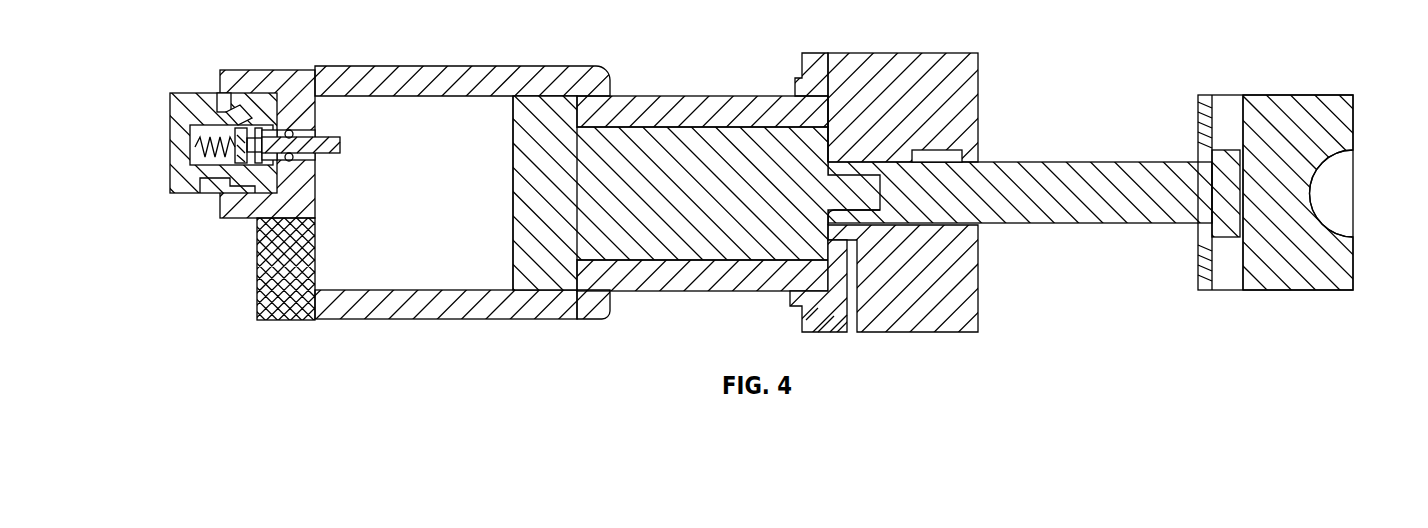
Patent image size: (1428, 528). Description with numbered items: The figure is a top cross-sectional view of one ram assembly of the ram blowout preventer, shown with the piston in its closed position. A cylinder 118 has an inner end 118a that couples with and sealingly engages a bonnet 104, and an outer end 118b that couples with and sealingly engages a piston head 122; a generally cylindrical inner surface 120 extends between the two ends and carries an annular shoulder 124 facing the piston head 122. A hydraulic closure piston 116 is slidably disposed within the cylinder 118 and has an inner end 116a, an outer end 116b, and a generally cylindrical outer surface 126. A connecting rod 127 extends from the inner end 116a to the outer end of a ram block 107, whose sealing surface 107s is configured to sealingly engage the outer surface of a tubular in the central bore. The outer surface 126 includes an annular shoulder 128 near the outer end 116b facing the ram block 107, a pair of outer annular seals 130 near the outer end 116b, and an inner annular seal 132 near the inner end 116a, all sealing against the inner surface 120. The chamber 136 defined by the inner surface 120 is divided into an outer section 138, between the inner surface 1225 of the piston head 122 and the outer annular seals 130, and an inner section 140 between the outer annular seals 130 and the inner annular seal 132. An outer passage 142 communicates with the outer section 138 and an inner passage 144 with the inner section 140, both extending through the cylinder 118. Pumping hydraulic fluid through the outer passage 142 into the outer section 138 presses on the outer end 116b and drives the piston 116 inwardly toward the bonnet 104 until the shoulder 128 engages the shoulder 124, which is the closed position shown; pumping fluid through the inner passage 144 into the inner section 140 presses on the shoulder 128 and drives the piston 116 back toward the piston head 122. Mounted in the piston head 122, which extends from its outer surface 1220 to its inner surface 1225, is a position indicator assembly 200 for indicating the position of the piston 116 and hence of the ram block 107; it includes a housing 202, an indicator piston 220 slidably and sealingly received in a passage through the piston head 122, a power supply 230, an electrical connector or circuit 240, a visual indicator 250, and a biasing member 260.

The bonnet 104 is at (954, 53).
The ram block 107 is at (714, 264).
The sealing surface 107s is at (1317, 213).
The hydraulic closure piston 116 is at (714, 264).
The inner end of piston 116a is at (829, 108).
The outer end of piston 116b is at (513, 210).
The cylinder 118 is at (497, 64).
The inner end of cylinder 118a is at (842, 80).
The outer end of cylinder 118b is at (320, 77).
The inner surface of cylinder 120 is at (714, 264).
The piston head 122 is at (275, 227).
The annular shoulder of cylinder 124 is at (585, 94).
The outer surface of piston 126 is at (660, 126).
The connecting rod 127 is at (1080, 224).
The annular shoulder of piston 128 is at (587, 258).
The outer annular seals 130 is at (543, 316).
The inner annular seal 132 is at (796, 292).
The chamber 136 is at (377, 107).
The outer section of chamber 138 is at (423, 105).
The inner section of chamber 140 is at (687, 262).
The outer passage 142 is at (322, 316).
The inner passage 144 is at (572, 319).
The outer surface of piston head 1220 is at (258, 311).
The inner surface of piston head 1225 is at (320, 263).
The position indicator assembly 200 is at (714, 264).
The housing 202 is at (182, 100).
The indicator piston 220 is at (342, 140).
The power supply 230 is at (300, 80).
The electrical connector or circuit 240 is at (243, 108).
The visual indicator 250 is at (203, 87).
The biasing member 260 is at (200, 187).